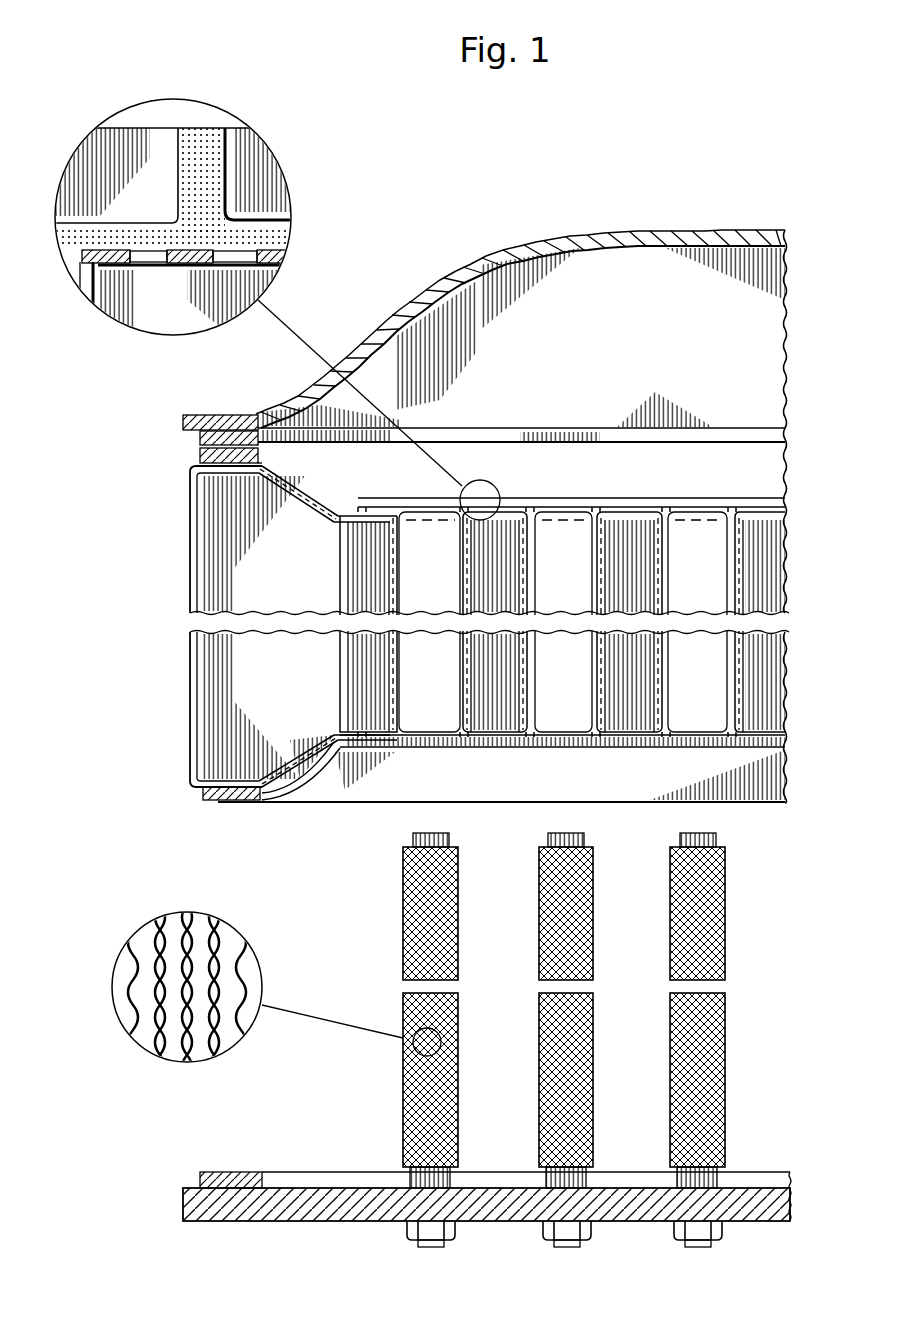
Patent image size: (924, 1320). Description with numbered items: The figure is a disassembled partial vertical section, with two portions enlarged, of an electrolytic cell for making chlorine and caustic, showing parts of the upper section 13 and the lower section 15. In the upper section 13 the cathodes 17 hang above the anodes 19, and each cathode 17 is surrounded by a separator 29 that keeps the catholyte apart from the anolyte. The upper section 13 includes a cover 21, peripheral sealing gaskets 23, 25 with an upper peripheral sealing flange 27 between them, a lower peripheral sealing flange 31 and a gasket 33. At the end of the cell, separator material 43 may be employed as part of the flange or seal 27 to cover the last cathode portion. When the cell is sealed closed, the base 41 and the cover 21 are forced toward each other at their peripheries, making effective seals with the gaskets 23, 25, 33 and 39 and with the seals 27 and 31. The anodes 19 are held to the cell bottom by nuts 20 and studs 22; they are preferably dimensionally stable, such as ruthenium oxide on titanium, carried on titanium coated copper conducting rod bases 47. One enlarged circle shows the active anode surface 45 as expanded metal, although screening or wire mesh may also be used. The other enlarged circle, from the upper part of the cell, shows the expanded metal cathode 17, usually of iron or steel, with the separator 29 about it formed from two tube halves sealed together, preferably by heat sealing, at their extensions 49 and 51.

The upper section 13 is at (292, 390).
The lower section 15 is at (183, 1213).
The cathode 17 is at (510, 516).
The anode 19 is at (590, 1050).
The nut 20 is at (410, 1232).
The cover 21 is at (460, 262).
The stud 22 is at (430, 1248).
The peripheral sealing gasket 23 is at (198, 437).
The peripheral sealing gasket 25 is at (198, 455).
The upper peripheral sealing flange 27 is at (264, 416).
The separator 29 is at (648, 510).
The lower peripheral sealing flange 31 is at (232, 806).
The gasket 33 is at (203, 793).
The gasket 39 is at (230, 1172).
The base 41 is at (258, 1222).
The separator material 43 is at (320, 492).
The active anode surface 45 is at (130, 1028).
The conducting rod base 47 is at (718, 840).
The extension 49 is at (188, 128).
The extension 51 is at (213, 128).